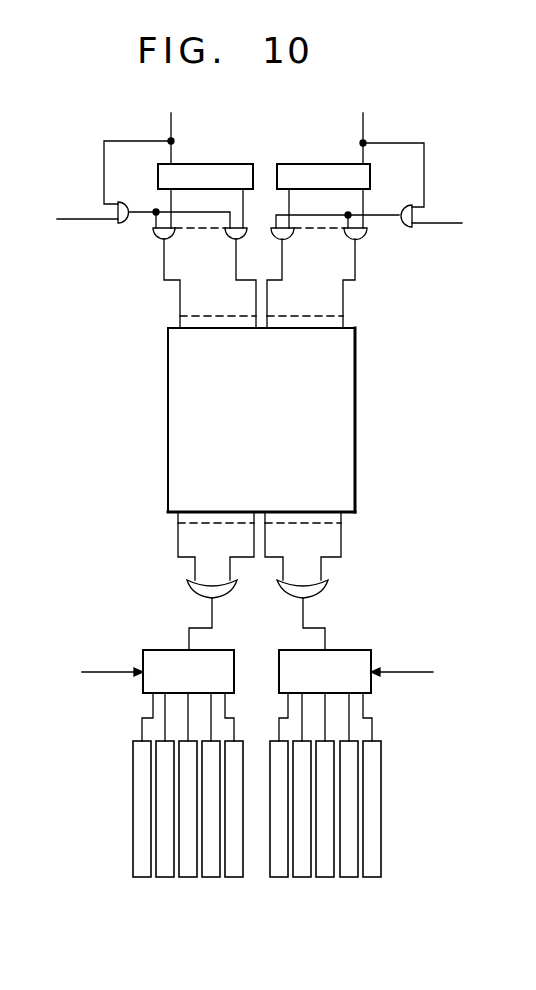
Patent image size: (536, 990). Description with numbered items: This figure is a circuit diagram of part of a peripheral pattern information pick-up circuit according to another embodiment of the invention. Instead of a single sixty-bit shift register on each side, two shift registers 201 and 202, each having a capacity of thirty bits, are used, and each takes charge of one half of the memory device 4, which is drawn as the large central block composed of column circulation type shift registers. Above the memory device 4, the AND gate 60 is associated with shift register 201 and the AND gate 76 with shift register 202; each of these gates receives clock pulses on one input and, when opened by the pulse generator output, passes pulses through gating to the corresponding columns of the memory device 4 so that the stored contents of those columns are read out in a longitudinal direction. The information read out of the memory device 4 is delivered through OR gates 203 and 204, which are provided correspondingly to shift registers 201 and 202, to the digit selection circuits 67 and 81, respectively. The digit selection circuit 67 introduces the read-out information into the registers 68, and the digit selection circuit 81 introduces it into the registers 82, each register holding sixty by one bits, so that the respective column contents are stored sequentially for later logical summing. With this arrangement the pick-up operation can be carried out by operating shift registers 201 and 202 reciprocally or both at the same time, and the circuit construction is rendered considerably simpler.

The shift register 201 is at (207, 164).
The shift register 202 is at (320, 164).
The AND gate 60 is at (123, 203).
The AND gate 76 is at (401, 205).
The memory circuit 4 is at (261, 420).
The OR gate 203 is at (200, 594).
The OR gate 204 is at (315, 594).
The digit selection circuit 67 is at (165, 650).
The digit selection circuit 81 is at (351, 650).
The registers 68 is at (133, 886).
The registers 82 is at (381, 886).